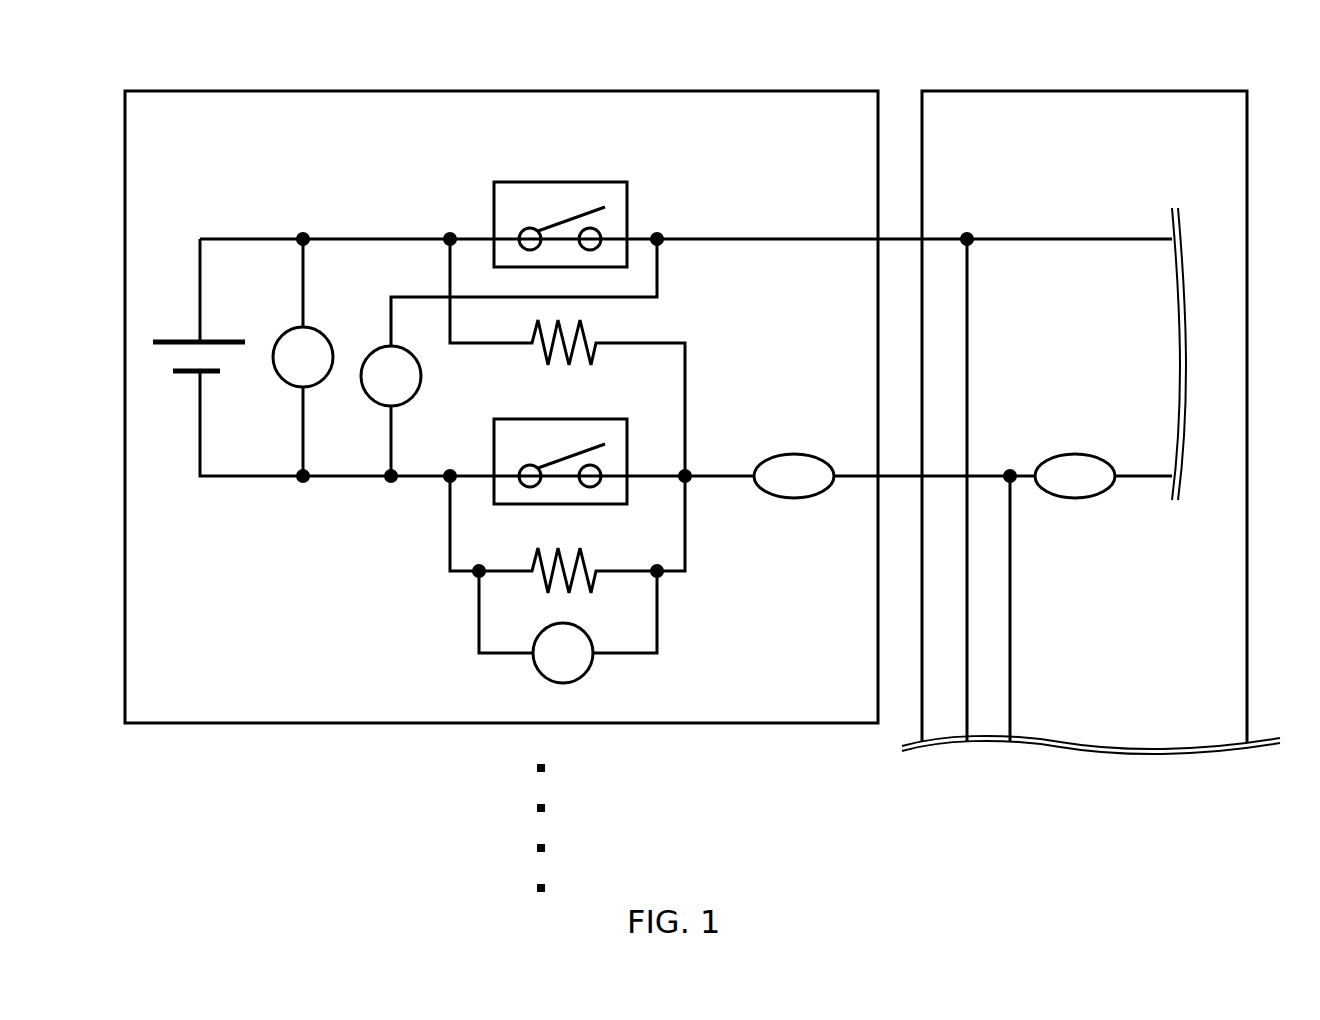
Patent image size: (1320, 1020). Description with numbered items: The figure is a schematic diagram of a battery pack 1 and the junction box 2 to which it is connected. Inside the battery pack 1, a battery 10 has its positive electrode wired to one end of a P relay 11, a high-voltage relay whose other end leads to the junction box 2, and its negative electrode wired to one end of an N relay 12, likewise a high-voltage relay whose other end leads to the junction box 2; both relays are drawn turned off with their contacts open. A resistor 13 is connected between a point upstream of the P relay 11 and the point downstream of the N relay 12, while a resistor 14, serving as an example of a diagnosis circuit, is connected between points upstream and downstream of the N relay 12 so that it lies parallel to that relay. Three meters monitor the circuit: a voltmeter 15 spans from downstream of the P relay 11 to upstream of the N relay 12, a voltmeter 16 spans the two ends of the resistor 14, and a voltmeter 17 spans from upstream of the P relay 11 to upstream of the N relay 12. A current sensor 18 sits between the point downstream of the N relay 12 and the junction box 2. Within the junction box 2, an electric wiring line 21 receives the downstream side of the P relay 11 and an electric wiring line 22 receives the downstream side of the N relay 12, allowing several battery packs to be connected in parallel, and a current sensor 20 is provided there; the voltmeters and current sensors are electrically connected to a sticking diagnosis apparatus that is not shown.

The battery pack 1 is at (502, 91).
The junction box 2 is at (1148, 91).
The battery 10 is at (213, 331).
The P relay (positive-electrode relay) 11 is at (605, 182).
The N relay (negative-electrode relay) 12 is at (608, 419).
The resistor 13 is at (590, 328).
The resistor 14 is at (589, 556).
The voltmeter 15 is at (421, 374).
The voltmeter 16 is at (585, 672).
The voltmeter 17 is at (325, 337).
The current sensor 18 is at (794, 454).
The current sensor 20 is at (1075, 455).
The electric wiring line 21 is at (967, 355).
The electric wiring line 22 is at (1010, 603).